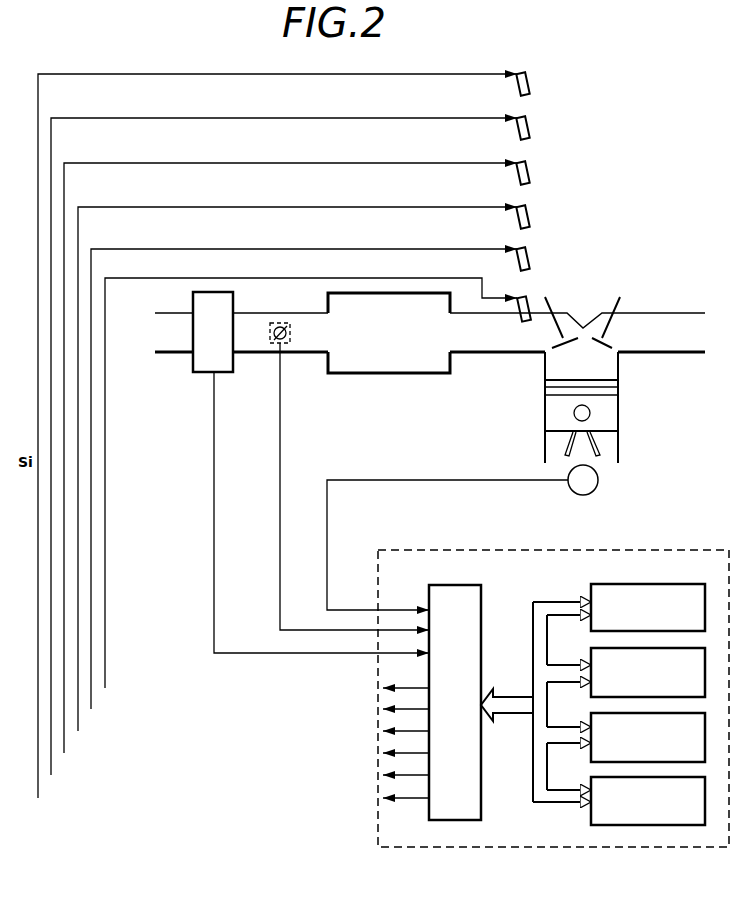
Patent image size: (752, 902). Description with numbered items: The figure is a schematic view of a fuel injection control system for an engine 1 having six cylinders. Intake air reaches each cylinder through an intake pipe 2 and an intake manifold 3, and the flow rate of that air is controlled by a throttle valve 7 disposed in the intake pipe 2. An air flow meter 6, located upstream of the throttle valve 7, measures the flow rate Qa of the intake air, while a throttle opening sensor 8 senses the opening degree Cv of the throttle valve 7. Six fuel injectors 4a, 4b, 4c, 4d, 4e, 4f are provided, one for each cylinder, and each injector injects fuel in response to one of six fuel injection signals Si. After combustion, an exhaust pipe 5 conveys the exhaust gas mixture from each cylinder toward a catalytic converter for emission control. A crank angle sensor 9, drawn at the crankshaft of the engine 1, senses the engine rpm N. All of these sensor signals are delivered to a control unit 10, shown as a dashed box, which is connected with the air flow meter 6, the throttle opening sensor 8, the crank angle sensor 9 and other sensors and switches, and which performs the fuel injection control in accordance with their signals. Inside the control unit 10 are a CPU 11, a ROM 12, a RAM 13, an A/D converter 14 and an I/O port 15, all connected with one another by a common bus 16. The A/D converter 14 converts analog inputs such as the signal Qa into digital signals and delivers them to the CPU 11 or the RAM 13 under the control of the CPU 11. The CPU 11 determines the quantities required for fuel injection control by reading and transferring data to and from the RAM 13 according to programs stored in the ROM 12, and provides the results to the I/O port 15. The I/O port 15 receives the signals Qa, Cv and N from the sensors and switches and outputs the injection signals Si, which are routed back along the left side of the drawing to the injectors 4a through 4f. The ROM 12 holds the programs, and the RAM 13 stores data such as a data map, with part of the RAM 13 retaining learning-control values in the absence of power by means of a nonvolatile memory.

The engine 1 is at (656, 230).
The intake pipe 2 is at (393, 373).
The intake manifold 3 is at (500, 352).
The fuel injector 4a is at (531, 80).
The fuel injector 4b is at (531, 124).
The fuel injector 4c is at (531, 169).
The fuel injector 4d is at (531, 213).
The fuel injector 4e is at (531, 255).
The fuel injector 4f is at (533, 301).
The exhaust pipe 5 is at (672, 352).
The air flow meter 6 is at (225, 372).
The throttle valve 7 is at (280, 320).
The throttle opening sensor 8 is at (291, 336).
The crank angle sensor 9 is at (583, 496).
The control unit 10 is at (488, 549).
The CPU 11 is at (690, 584).
The ROM 12 is at (699, 640).
The RAM 13 is at (699, 705).
The A/D converter 14 is at (699, 769).
The I/O port 15 is at (482, 605).
The common bus 16 is at (531, 775).